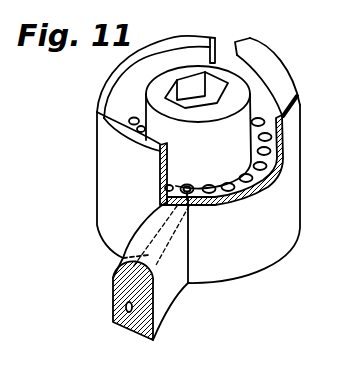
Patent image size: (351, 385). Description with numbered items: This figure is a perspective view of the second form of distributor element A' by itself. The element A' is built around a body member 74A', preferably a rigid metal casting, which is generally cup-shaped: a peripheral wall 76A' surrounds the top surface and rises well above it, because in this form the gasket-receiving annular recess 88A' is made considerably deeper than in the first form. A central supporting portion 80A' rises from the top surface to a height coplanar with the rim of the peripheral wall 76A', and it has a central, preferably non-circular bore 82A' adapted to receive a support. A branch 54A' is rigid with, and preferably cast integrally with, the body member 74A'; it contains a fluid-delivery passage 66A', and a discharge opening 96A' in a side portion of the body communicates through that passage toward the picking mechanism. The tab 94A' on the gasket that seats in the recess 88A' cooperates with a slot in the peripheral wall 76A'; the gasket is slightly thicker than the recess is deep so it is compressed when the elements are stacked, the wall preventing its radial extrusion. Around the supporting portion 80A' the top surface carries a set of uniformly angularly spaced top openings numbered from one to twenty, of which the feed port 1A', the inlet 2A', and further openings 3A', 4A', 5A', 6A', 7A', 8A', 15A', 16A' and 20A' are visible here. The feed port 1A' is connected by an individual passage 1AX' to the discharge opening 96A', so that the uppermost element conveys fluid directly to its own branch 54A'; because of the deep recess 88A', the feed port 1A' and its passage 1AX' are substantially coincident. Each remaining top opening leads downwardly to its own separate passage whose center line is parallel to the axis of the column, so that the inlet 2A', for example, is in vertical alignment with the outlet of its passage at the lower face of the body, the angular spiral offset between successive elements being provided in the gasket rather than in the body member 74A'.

The distributor element A' is at (136, 105).
The body member 74A' is at (173, 194).
The peripheral wall 76A' is at (216, 78).
The gasket-receiving annular recess 88A' is at (213, 103).
The tab 94A' is at (238, 33).
The supporting portion 80A' is at (227, 108).
The central bore 82A' is at (196, 90).
The top opening 20A' is at (146, 174).
The top opening 15A' is at (102, 114).
The top opening 16A' is at (104, 130).
The feed port 1A' is at (205, 205).
The passage 1AX' is at (209, 215).
The inlet 2A' is at (233, 210).
The top opening 3A' is at (251, 202).
The top opening 4A' is at (268, 188).
The top opening 5A' is at (295, 169).
The top opening 6A' is at (297, 151).
The top opening 7A' is at (298, 133).
The top opening 8A' is at (294, 109).
The discharge opening 96A' is at (131, 271).
The branch 54A' is at (109, 300).
The fluid-delivery passage 66A' is at (116, 333).